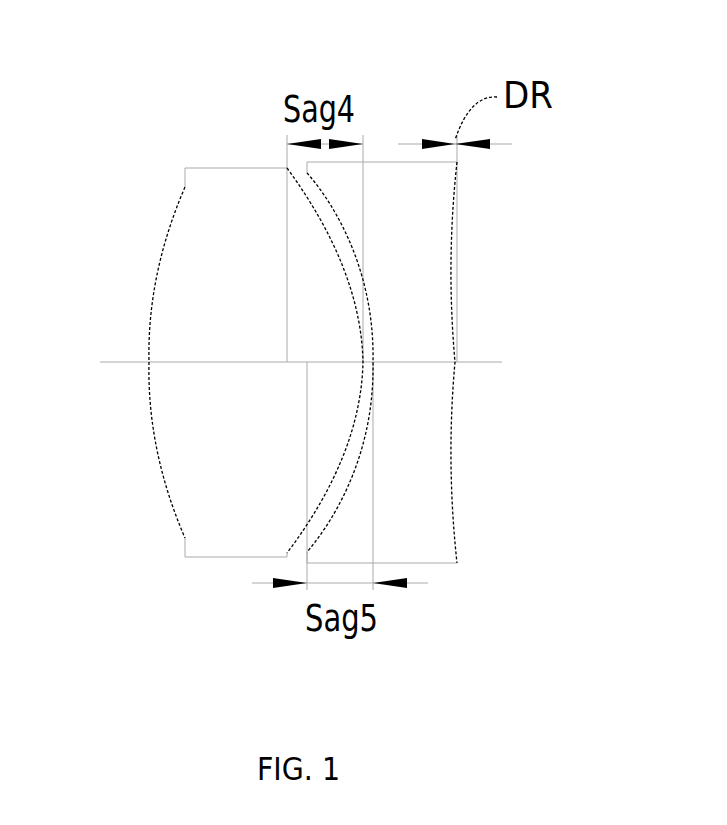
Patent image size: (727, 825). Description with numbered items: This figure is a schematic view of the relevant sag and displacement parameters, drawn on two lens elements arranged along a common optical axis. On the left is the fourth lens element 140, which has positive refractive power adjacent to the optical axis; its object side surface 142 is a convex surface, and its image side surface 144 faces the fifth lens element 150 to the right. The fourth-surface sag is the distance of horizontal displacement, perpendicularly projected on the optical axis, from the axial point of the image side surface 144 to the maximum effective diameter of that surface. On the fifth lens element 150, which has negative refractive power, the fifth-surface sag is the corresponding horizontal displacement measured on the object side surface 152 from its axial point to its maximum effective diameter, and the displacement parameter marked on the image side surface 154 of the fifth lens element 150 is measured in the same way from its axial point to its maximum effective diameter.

The fourth lens element 140 is at (205, 278).
The object side surface of the fourth lens element 142 is at (183, 520).
The image side surface of the fourth lens element 144 is at (337, 475).
The fifth lens element 150 is at (426, 283).
The object side surface of the fifth lens element 152 is at (337, 500).
The image side surface of the fifth lens element 154 is at (455, 542).